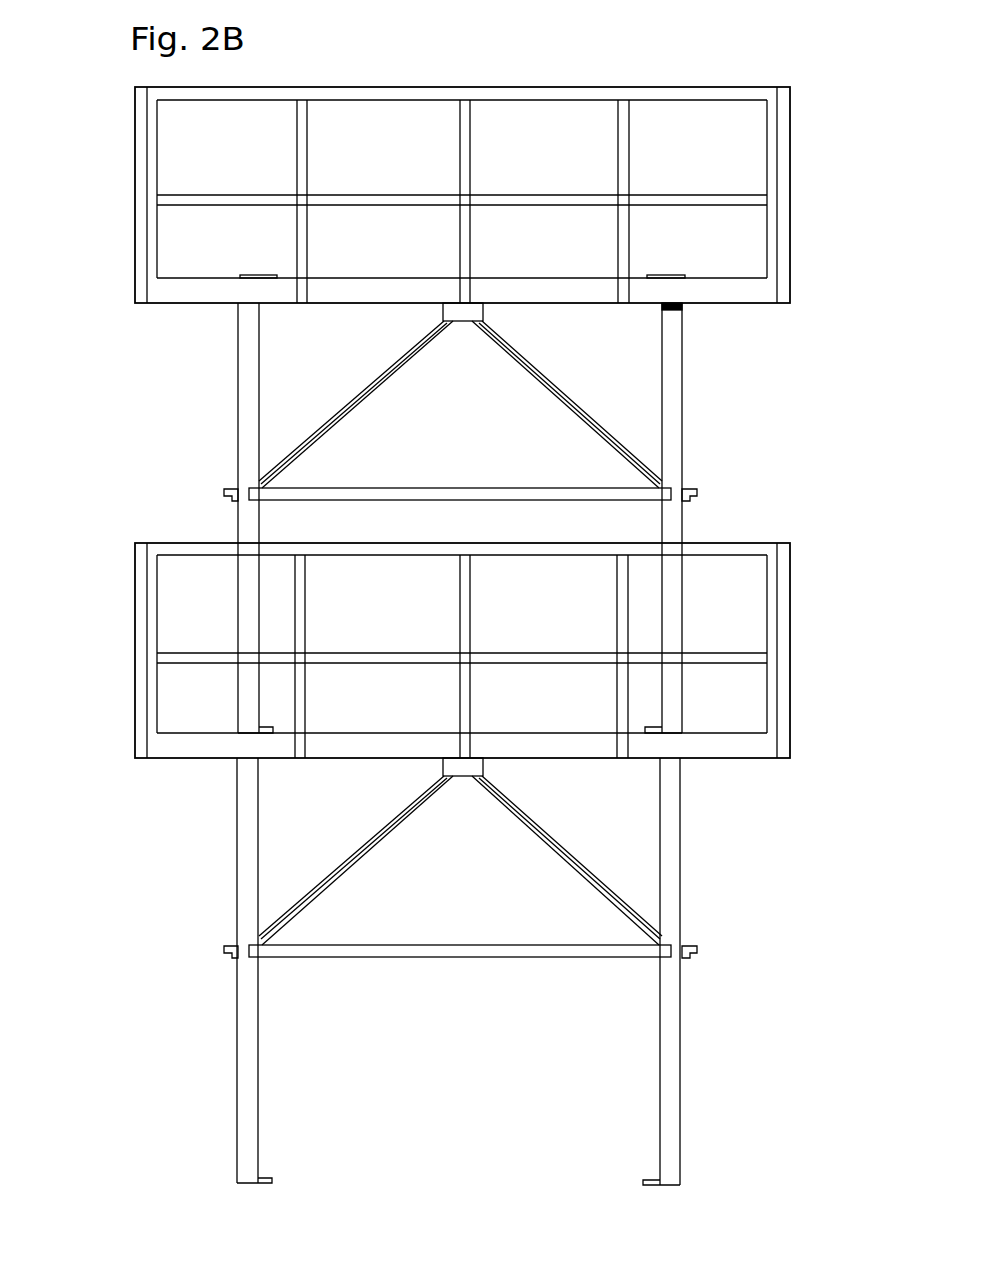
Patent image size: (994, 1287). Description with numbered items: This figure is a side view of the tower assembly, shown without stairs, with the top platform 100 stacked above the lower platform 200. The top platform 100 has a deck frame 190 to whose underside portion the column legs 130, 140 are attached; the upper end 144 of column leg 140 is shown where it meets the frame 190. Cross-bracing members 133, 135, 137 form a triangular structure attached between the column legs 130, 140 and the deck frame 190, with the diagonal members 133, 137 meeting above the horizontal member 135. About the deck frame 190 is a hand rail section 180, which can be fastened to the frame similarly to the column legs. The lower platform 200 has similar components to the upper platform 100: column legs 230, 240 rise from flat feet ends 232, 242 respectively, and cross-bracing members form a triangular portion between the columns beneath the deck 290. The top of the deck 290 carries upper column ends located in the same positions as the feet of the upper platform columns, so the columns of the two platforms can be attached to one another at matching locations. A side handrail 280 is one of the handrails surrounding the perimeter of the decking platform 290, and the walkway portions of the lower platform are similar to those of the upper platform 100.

The top platform 100 is at (108, 217).
The hand rail section 180 is at (435, 202).
The deck frame 190 is at (423, 325).
The column leg 130 is at (193, 423).
The column leg 140 is at (732, 423).
The upper end 144 is at (732, 333).
The cross-bracing member 133 is at (378, 404).
The cross-bracing member 137 is at (645, 404).
The cross-bracing member 135 is at (460, 514).
The lower platform 200 is at (93, 665).
The side handrail 280 is at (440, 690).
The deck 290 is at (428, 782).
The column leg 230 is at (181, 970).
The flat foot end 232 is at (212, 1158).
The column leg 240 is at (720, 971).
The flat foot end 242 is at (704, 1163).